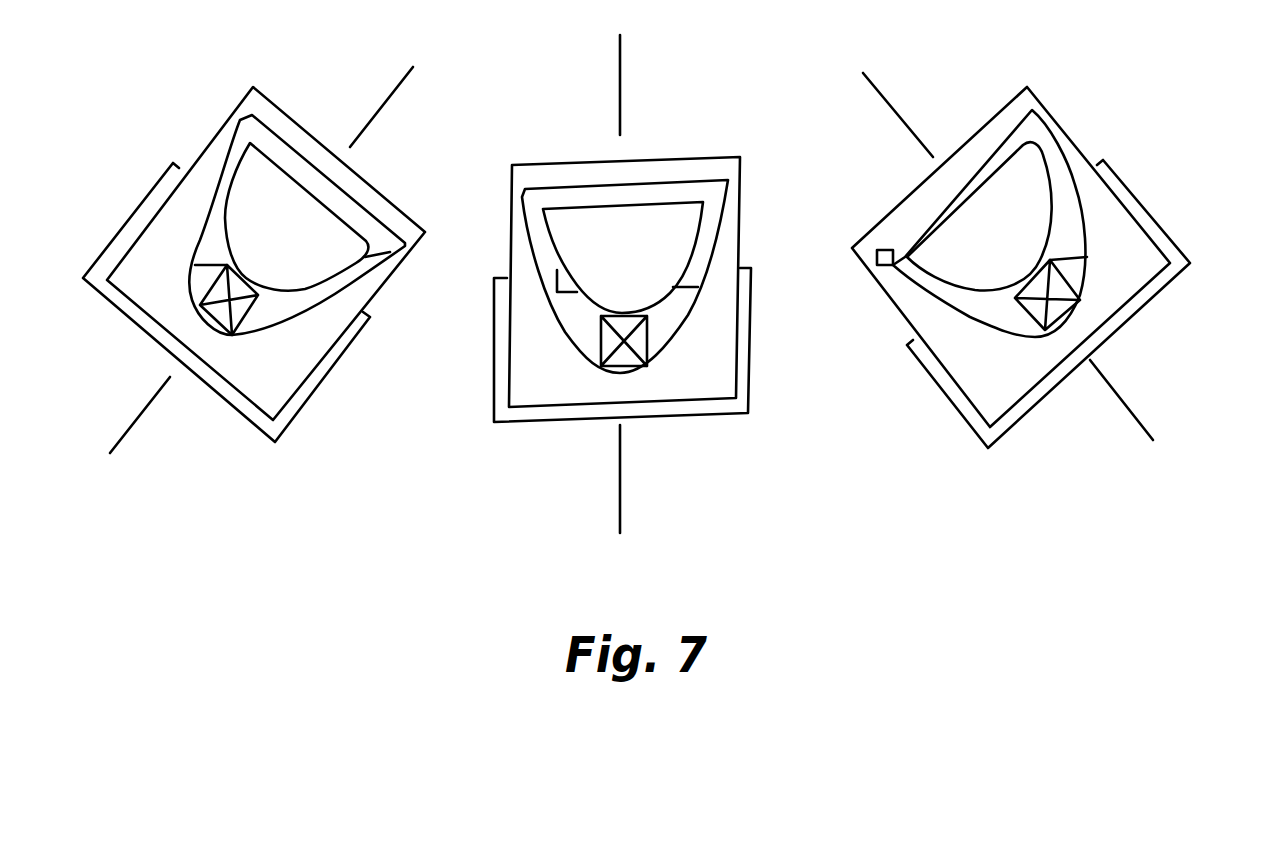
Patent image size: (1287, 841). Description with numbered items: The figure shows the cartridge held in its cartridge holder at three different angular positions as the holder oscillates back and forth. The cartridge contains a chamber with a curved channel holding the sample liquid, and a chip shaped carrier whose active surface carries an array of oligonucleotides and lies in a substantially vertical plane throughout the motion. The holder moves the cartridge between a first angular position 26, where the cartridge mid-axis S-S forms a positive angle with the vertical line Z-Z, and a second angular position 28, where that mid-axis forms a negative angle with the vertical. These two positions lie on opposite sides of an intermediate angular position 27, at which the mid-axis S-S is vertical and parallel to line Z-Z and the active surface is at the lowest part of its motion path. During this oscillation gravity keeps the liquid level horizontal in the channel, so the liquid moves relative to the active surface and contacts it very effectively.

The first angular position 26 is at (1055, 250).
The intermediate angular position 27 is at (616, 299).
The second angular position 28 is at (277, 297).